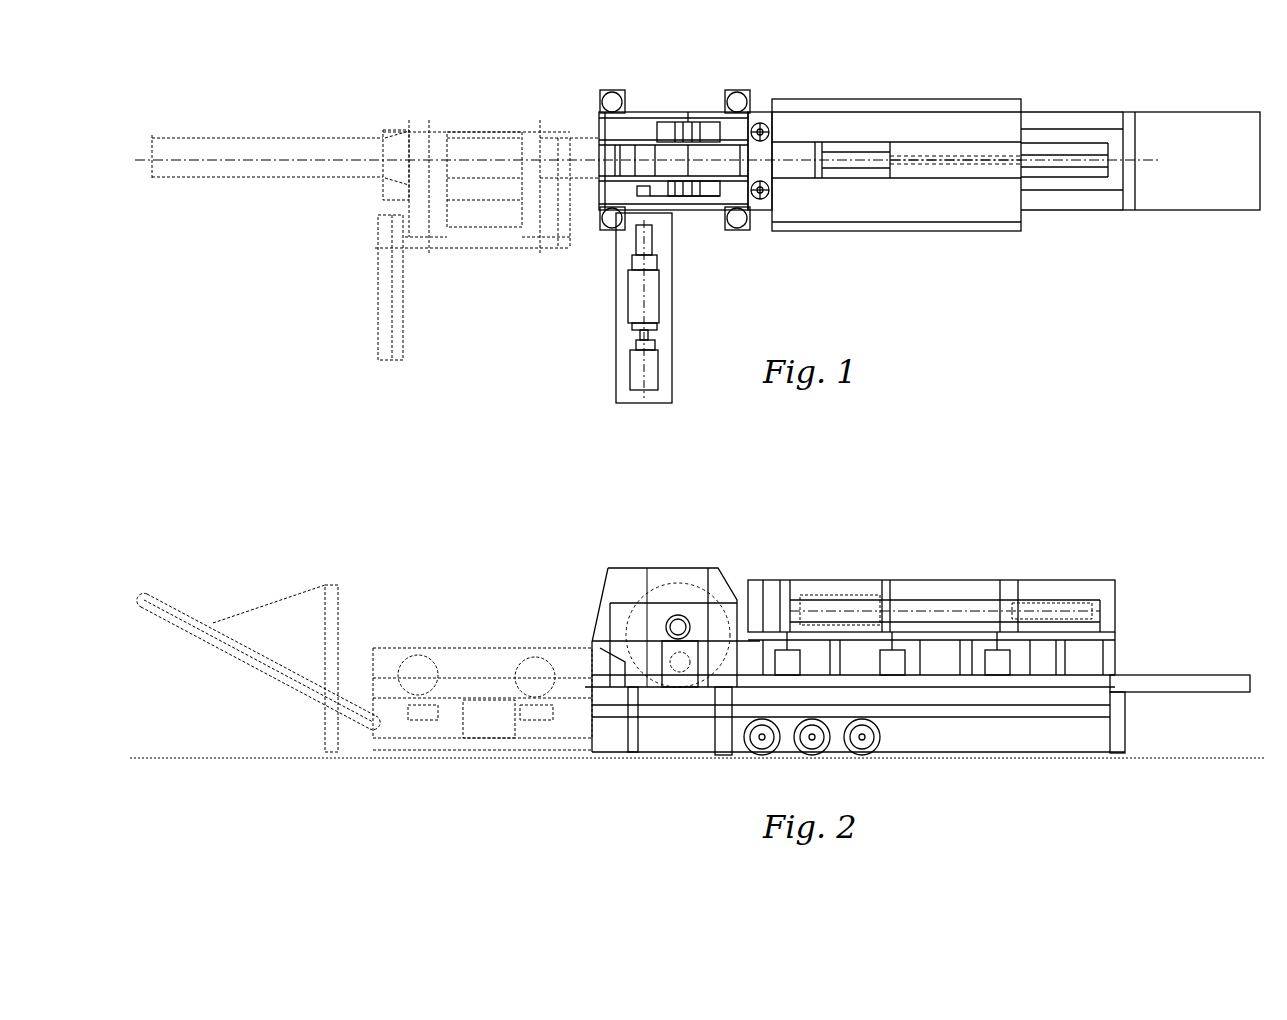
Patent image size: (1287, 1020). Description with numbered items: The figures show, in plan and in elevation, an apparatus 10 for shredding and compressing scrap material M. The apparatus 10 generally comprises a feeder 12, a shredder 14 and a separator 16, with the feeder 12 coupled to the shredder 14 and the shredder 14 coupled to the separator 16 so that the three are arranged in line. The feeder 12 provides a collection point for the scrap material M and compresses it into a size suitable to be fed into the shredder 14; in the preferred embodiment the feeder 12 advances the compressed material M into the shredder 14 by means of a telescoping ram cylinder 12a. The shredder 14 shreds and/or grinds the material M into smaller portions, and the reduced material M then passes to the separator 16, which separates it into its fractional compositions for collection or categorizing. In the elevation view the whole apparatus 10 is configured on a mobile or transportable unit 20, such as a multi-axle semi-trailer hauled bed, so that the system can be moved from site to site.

In FIG. 1, the apparatus 10 is at (1108, 72).
In FIG. 1, the feeder 12 is at (950, 142).
In FIG. 2, the feeder 12 is at (975, 580).
In FIG. 1, the telescoping ram cylinder 12a is at (862, 158).
In FIG. 1, the shredder 14 is at (672, 112).
In FIG. 2, the shredder 14 is at (695, 568).
In FIG. 1, the separator 16 is at (583, 140).
In FIG. 2, the separator 16 is at (507, 648).
In FIG. 2, the mobile or transportable unit 20 is at (938, 720).
In FIG. 2, the scrap material M is at (850, 600).